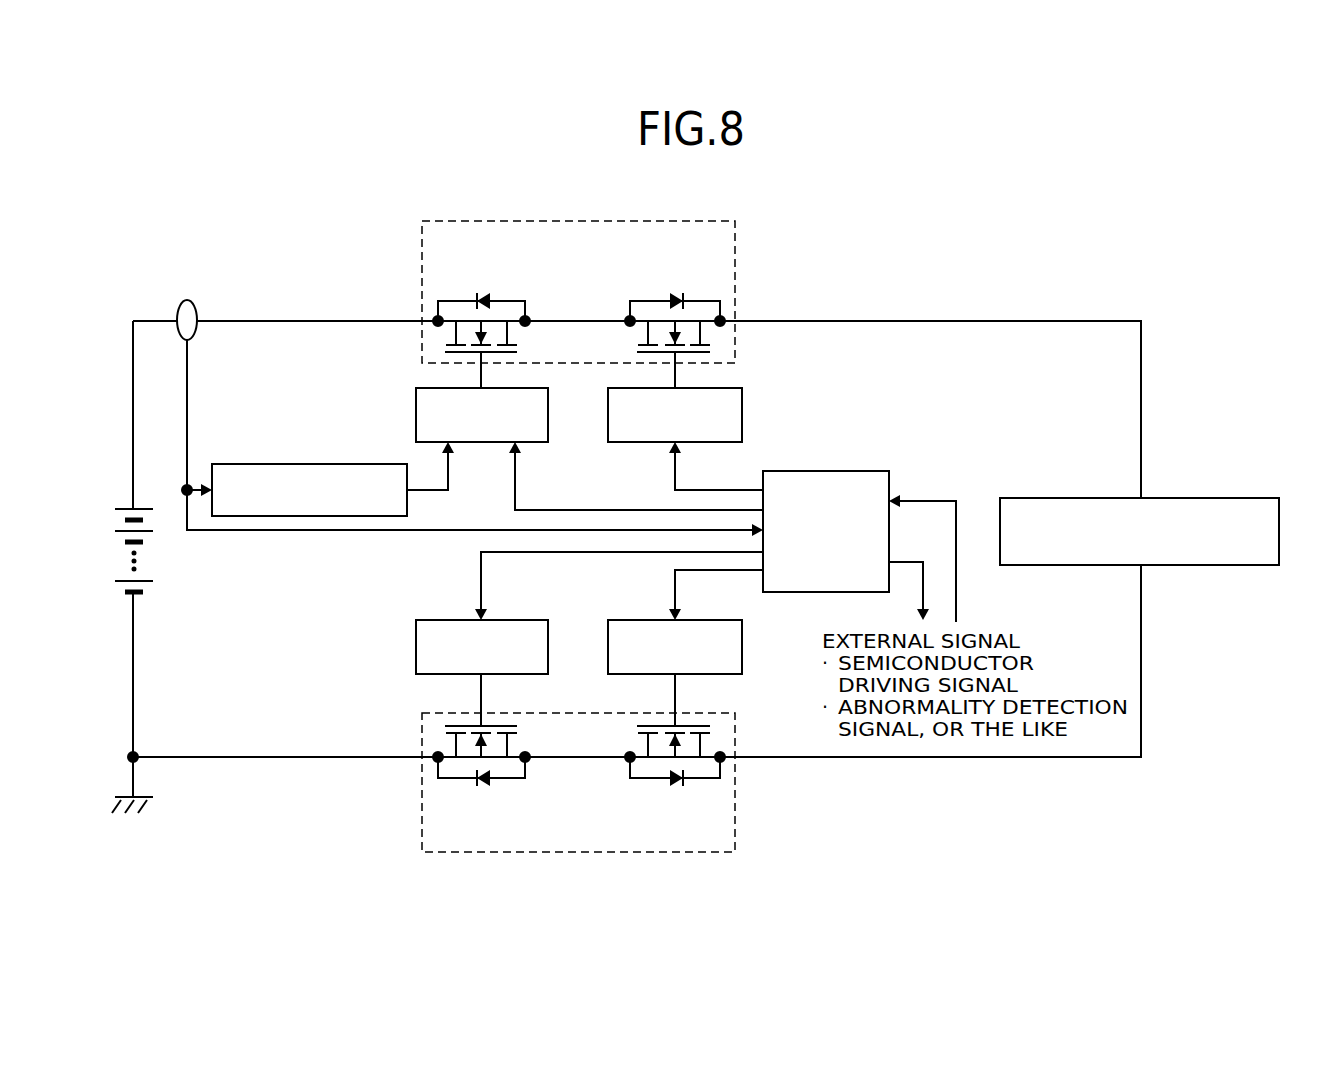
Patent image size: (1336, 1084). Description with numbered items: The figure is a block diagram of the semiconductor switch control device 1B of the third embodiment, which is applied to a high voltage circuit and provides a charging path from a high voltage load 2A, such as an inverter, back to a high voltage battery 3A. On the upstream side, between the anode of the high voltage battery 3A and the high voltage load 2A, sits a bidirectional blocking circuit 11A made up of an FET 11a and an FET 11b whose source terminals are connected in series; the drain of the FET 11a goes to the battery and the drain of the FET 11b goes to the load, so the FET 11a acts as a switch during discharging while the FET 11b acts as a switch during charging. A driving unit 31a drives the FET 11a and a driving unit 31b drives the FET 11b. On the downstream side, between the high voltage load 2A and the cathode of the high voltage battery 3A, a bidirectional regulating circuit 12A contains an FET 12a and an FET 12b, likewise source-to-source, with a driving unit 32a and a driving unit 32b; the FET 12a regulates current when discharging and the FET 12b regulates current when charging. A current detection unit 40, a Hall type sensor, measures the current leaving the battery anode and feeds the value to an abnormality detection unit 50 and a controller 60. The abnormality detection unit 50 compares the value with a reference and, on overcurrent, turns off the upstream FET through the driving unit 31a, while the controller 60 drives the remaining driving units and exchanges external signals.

The semiconductor switch control device 1B is at (890, 215).
The high voltage load 2A is at (1200, 498).
The high voltage battery 3A is at (176, 576).
The bidirectional blocking circuit 11A is at (706, 221).
The FET 11a is at (514, 280).
The FET 11b is at (642, 280).
The bidirectional regulating circuit 12A is at (706, 852).
The FET 12a is at (642, 800).
The FET 12b is at (514, 800).
The driving unit 31a is at (416, 402).
The driving unit 31b is at (742, 402).
The driving unit 32a is at (742, 632).
The driving unit 32b is at (416, 632).
The current detection unit 40 is at (192, 303).
The abnormality detection unit 50 is at (386, 464).
The controller 60 is at (856, 471).